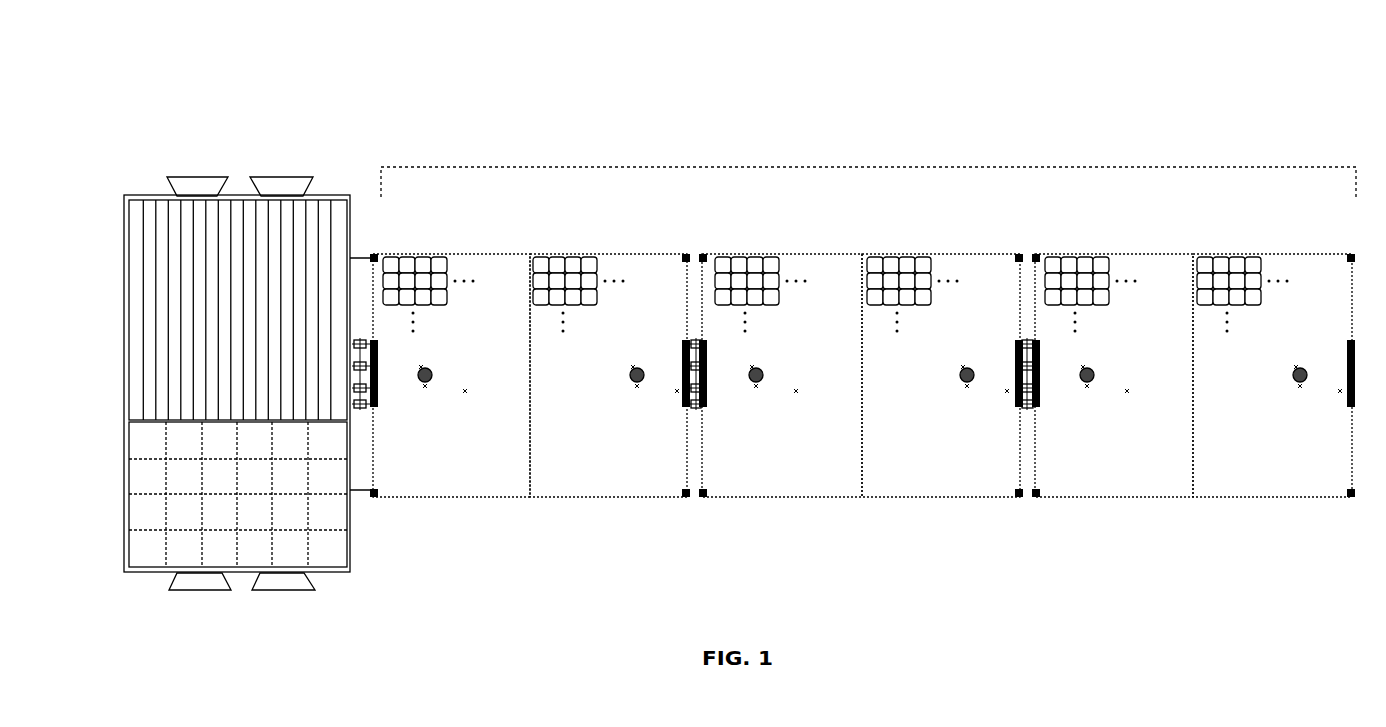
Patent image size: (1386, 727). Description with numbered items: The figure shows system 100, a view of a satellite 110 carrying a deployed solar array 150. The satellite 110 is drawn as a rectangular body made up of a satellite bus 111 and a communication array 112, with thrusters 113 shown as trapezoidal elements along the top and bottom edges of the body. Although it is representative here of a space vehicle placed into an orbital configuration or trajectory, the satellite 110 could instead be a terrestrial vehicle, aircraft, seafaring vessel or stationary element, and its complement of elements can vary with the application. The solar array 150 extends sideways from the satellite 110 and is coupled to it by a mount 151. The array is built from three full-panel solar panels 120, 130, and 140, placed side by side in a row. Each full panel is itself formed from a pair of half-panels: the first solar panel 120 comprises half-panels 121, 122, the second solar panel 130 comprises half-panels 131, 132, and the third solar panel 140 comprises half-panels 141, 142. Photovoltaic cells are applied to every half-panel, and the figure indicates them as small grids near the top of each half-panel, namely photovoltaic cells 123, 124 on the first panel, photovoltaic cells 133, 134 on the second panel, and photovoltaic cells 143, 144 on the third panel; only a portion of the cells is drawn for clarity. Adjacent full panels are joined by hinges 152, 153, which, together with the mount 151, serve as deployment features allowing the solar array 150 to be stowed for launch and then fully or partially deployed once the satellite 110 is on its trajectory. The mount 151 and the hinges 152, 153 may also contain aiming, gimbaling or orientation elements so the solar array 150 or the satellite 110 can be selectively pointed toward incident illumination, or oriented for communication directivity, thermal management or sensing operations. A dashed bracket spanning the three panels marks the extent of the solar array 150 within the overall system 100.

The system 100 is at (188, 72).
The satellite 110 is at (210, 117).
The satellite bus 111 is at (147, 195).
The communication array 112 is at (150, 546).
The thrusters 113 is at (193, 170).
The solar panel 120 is at (528, 220).
The half-panel 121 is at (462, 481).
The half-panel 122 is at (632, 481).
The photovoltaic cells 123 is at (393, 262).
The photovoltaic cells 124 is at (592, 264).
The solar panel 130 is at (859, 219).
The half-panel 131 is at (806, 481).
The half-panel 132 is at (976, 481).
The photovoltaic cells 133 is at (722, 266).
The photovoltaic cells 134 is at (923, 266).
The solar panel 140 is at (1186, 219).
The half-panel 141 is at (1139, 481).
The half-panel 142 is at (1304, 481).
The photovoltaic cells 143 is at (1052, 266).
The photovoltaic cells 144 is at (1255, 266).
The solar array 150 is at (868, 166).
The mount 151 is at (369, 422).
The hinge 152 is at (699, 413).
The hinge 153 is at (1032, 414).